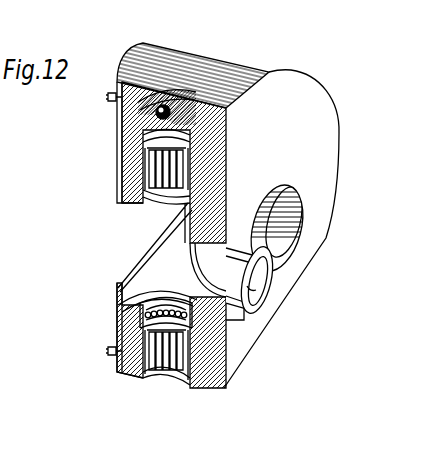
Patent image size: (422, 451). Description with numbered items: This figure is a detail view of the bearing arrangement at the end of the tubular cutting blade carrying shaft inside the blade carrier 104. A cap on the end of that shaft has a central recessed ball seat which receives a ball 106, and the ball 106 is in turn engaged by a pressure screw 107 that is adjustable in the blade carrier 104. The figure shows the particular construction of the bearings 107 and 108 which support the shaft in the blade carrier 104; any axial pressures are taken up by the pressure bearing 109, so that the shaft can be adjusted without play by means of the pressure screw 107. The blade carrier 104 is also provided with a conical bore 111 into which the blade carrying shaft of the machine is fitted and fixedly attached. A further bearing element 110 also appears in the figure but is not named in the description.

The blade carrier 104 is at (291, 70).
The ball 106 is at (196, 125).
The pressure screw 107 is at (183, 96).
The bearing 108 is at (164, 188).
The pressure bearing 109 is at (169, 358).
The ball bearing 110 is at (172, 302).
The conical bore 111 is at (256, 293).